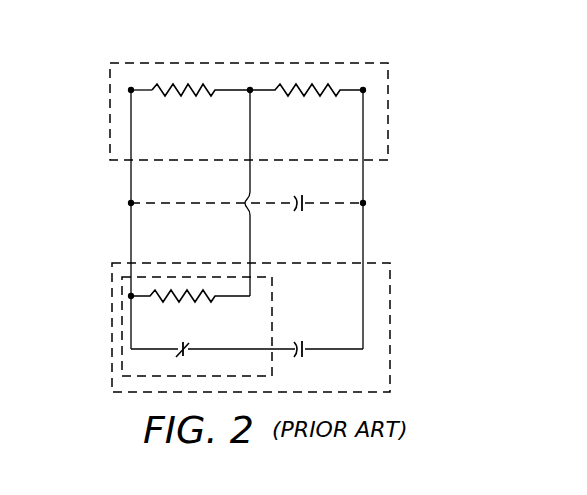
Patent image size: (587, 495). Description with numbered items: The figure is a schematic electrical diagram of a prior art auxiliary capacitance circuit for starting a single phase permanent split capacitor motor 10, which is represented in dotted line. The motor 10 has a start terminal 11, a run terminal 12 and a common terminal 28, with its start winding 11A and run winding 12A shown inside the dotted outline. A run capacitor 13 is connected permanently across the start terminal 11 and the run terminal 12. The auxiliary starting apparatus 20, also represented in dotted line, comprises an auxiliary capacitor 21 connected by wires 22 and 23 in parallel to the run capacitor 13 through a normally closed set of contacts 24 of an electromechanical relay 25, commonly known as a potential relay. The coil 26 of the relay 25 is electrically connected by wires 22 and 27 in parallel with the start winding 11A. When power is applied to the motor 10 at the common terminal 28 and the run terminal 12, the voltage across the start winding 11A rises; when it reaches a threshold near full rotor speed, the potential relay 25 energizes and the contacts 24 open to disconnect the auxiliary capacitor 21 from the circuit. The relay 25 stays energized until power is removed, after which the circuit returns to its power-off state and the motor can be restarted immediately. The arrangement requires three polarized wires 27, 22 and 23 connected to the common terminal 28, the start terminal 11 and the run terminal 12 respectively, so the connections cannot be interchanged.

The motor 10 is at (103, 84).
The start terminal 11 is at (133, 88).
The start winding 11A is at (195, 86).
The run terminal 12 is at (363, 88).
The run winding 12A is at (305, 86).
The common terminal 28 is at (250, 88).
The run capacitor 13 is at (305, 202).
The wire 22 is at (130, 227).
The wire 23 is at (363, 215).
The wire 27 is at (250, 222).
The auxiliary starting apparatus 20 is at (104, 343).
The electromechanical relay 25 is at (273, 280).
The coil 26 is at (186, 299).
The contacts 24 is at (188, 352).
The auxiliary capacitor 21 is at (306, 347).